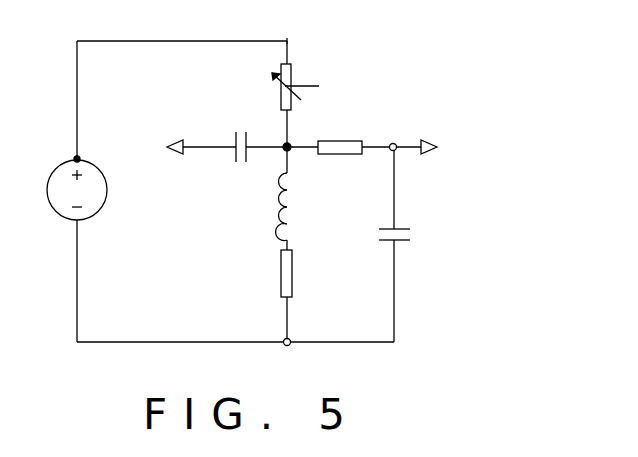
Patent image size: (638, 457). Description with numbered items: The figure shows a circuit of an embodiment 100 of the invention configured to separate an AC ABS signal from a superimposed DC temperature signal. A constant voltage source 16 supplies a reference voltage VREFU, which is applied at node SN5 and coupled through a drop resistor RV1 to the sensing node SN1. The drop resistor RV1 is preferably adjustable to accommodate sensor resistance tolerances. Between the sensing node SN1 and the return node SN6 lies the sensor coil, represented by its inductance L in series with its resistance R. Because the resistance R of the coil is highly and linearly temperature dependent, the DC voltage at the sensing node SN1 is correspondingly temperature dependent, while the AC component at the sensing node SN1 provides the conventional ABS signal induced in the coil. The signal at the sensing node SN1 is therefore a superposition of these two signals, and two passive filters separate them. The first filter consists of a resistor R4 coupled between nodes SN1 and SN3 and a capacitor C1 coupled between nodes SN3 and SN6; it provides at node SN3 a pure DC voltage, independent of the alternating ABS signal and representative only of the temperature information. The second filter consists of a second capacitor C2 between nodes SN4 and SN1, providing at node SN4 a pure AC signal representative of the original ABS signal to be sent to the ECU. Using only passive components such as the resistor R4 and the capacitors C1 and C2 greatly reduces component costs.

The constant voltage source 16 is at (35, 192).
The embodiment 100 is at (185, 272).
The reference voltage VREFU is at (111, 149).
The drop resistor RV1 is at (306, 76).
The node SN5 is at (288, 30).
The second capacitor C2 is at (232, 133).
The node SN4 is at (179, 136).
The node SN3 is at (428, 133).
The sensing node SN1 is at (270, 137).
The node SN6 is at (285, 356).
The resistor R4 is at (339, 137).
The coil inductance L is at (290, 207).
The coil resistance R is at (299, 273).
The capacitor C1 is at (410, 233).